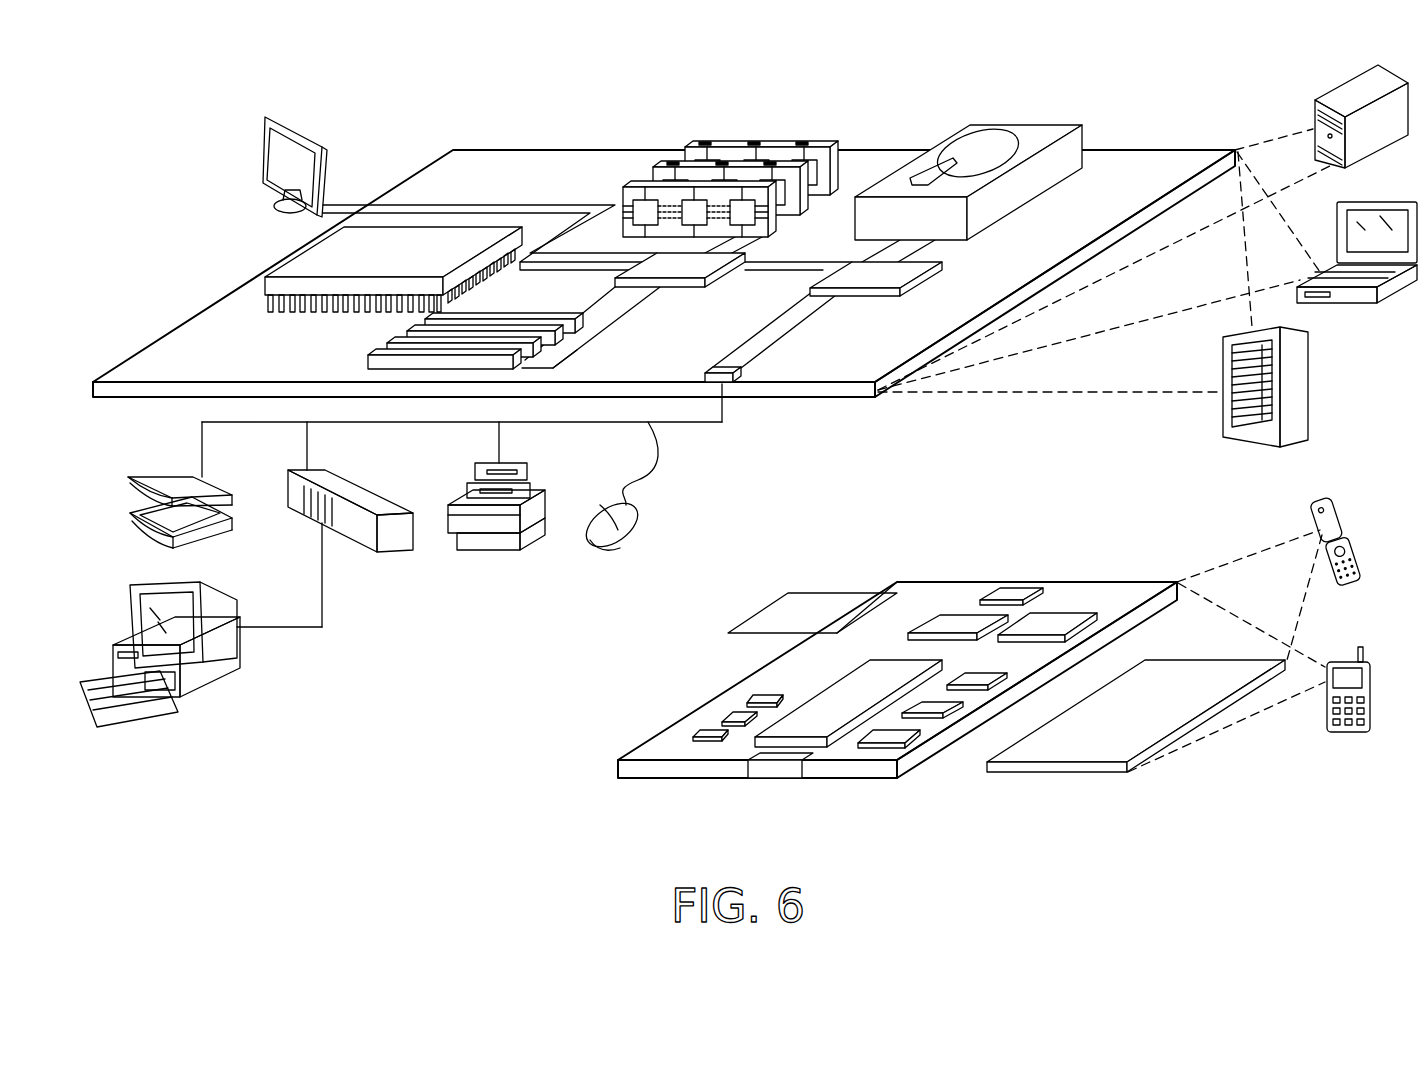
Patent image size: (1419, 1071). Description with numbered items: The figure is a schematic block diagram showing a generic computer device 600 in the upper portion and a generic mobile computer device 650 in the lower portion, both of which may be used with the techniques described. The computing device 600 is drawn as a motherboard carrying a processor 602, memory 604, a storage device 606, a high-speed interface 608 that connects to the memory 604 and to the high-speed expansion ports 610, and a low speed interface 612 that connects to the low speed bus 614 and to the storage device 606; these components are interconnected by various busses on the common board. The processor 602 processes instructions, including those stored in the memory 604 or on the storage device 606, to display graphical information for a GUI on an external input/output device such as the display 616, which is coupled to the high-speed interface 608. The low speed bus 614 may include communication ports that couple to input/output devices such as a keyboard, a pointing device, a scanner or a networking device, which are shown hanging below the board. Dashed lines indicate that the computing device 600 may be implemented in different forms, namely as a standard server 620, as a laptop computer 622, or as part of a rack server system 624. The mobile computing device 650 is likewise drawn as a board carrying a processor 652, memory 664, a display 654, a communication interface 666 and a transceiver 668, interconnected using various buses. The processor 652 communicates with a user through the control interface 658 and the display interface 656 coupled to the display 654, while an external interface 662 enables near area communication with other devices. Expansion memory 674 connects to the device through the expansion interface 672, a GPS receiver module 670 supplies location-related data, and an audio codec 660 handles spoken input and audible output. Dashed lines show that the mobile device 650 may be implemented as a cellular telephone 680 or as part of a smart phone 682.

The generic computer device 600 is at (395, 85).
The processor 602 is at (291, 260).
The memory 604 is at (772, 148).
The storage device 606 is at (1013, 125).
The high-speed interface 608 is at (695, 262).
The high-speed expansion ports 610 is at (395, 343).
The low speed interface 612 is at (847, 266).
The low speed bus 614 is at (728, 368).
The display 616 is at (265, 115).
The standard server 620 is at (1338, 92).
The laptop computer 622 is at (1395, 202).
The rack server system 624 is at (1310, 385).
The generic mobile computer device 650 is at (562, 795).
The processor 652 is at (817, 708).
The display 654 is at (1175, 675).
The display interface 656 is at (900, 735).
The control interface 658 is at (940, 707).
The audio codec 660 is at (982, 675).
The external interface 662 is at (774, 766).
The memory 664 is at (728, 713).
The communication interface 666 is at (958, 615).
The transceiver 668 is at (1055, 617).
The GPS receiver module 670 is at (1013, 592).
The expansion interface 672 is at (877, 592).
The expansion memory 674 is at (788, 593).
The cellular telephone 680 is at (1333, 500).
The smart phone 682 is at (1342, 657).